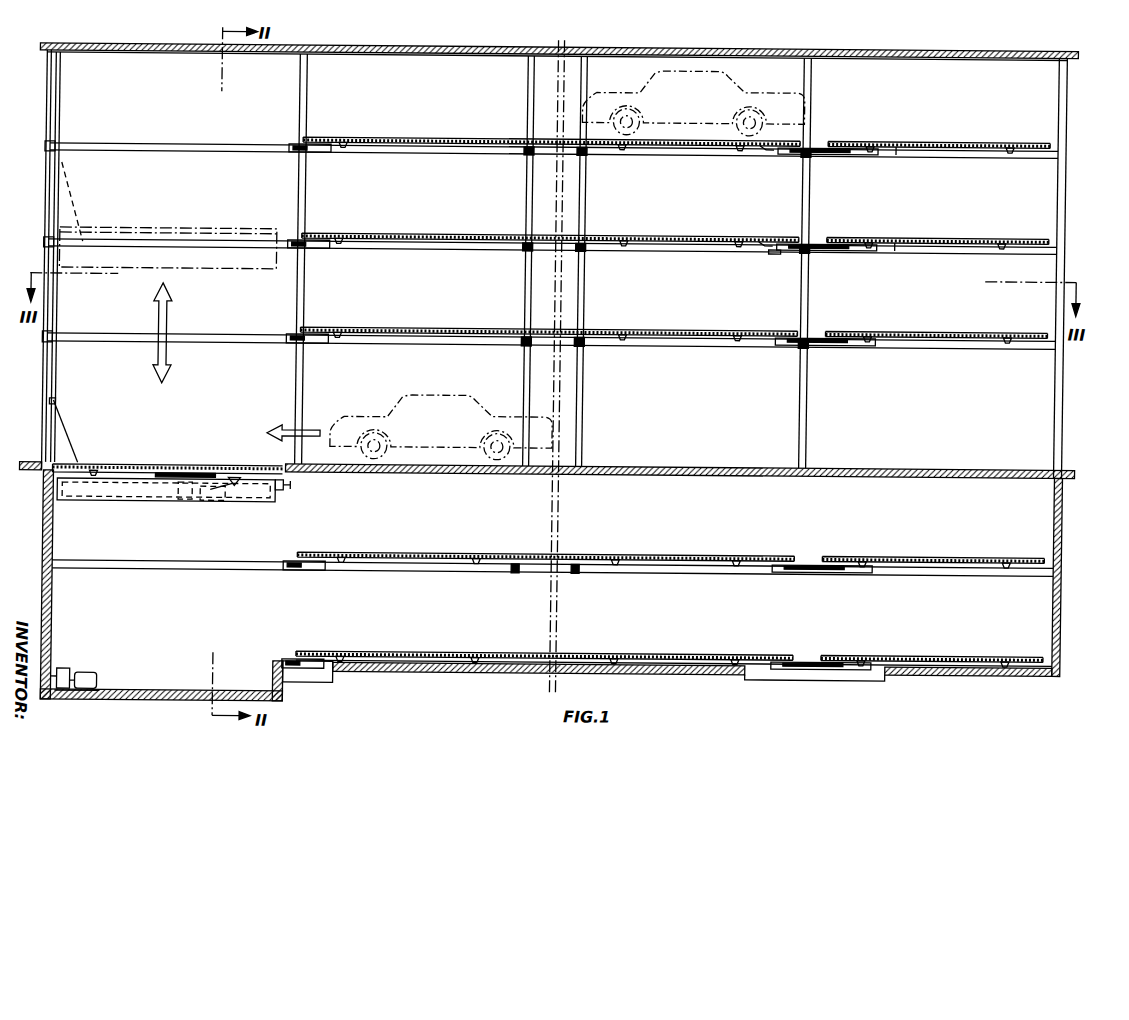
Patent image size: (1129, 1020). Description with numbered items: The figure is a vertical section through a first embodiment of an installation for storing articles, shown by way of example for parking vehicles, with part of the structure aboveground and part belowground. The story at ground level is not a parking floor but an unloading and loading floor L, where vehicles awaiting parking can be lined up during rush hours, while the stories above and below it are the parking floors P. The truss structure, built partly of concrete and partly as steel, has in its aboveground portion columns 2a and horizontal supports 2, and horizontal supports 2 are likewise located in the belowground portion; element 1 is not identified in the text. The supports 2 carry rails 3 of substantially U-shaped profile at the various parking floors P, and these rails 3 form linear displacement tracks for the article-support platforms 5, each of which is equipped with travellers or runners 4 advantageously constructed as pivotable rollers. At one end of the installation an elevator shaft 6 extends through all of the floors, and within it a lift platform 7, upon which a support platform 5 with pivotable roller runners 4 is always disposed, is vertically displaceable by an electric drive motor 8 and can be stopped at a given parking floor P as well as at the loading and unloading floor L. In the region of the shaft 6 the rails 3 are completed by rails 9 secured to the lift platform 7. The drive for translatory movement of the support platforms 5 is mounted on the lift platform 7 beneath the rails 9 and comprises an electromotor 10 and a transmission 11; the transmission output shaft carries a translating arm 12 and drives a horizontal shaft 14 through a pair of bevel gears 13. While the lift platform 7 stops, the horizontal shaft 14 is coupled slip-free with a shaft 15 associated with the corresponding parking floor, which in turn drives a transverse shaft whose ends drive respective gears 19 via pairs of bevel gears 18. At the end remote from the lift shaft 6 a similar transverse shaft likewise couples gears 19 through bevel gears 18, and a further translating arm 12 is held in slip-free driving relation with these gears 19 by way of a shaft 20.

The column 1 is at (527, 89).
The horizontal support 2 is at (525, 150).
The column 2a is at (300, 181).
The rail 3 is at (393, 147).
The runner 4 is at (342, 137).
The support platform 5 is at (421, 136).
The elevator shaft 6 is at (283, 480).
The lift platform 7 is at (208, 265).
The electric drive motor 8 is at (75, 674).
The rail 9 is at (247, 472).
The electromotor 10 is at (190, 502).
The transmission 11 is at (220, 499).
The translating arm 12 is at (907, 149).
The pair of bevel gears 13 is at (230, 494).
The horizontal shaft 14 is at (285, 484).
The shaft 15 is at (318, 152).
The pair of bevel gears 18 is at (777, 246).
The gear 19 is at (352, 250).
The shaft 20 is at (838, 154).
The parking floor P is at (71, 98).
The loading and unloading floor L is at (75, 369).